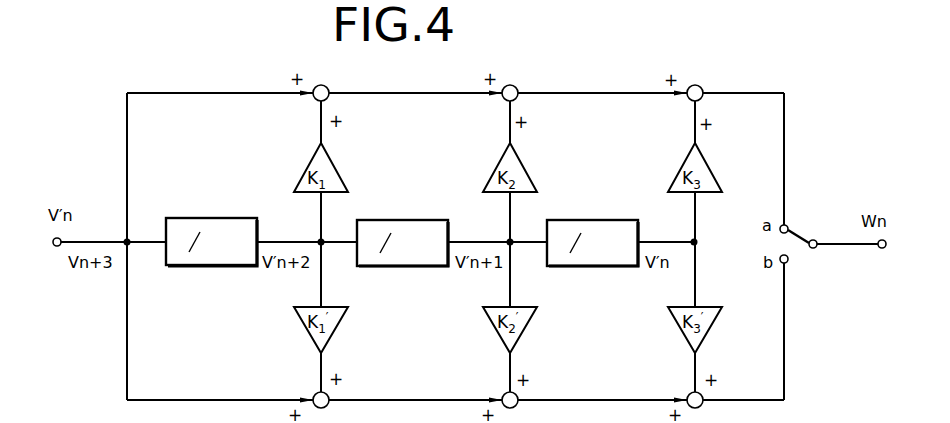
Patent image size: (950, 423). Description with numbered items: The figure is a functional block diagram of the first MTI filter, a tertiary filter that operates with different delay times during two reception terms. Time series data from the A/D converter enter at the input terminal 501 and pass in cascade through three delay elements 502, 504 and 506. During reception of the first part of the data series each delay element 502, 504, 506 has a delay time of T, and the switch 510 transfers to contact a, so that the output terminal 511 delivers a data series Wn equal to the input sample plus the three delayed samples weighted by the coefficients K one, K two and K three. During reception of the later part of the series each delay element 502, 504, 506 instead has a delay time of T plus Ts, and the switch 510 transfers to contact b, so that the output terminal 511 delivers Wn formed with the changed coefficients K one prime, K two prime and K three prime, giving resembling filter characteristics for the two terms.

The input terminal 501 is at (57, 247).
The delay element 502 is at (224, 218).
The delay element 504 is at (416, 220).
The delay element 506 is at (606, 220).
The switch 510 is at (805, 239).
The output terminal 511 is at (880, 249).